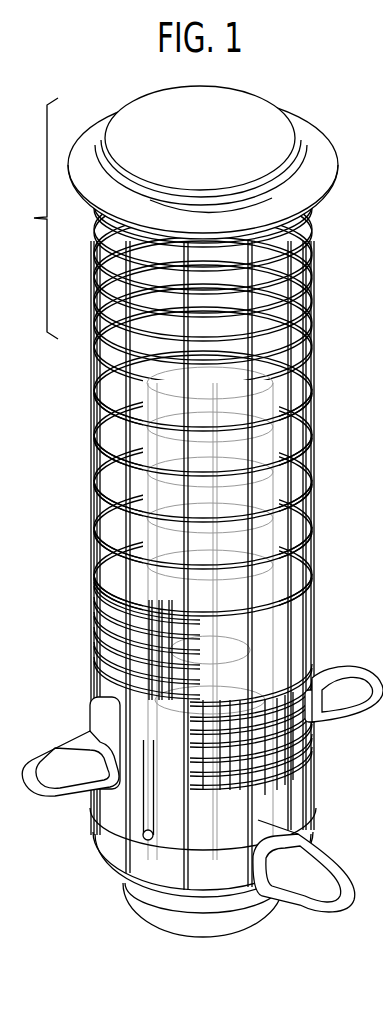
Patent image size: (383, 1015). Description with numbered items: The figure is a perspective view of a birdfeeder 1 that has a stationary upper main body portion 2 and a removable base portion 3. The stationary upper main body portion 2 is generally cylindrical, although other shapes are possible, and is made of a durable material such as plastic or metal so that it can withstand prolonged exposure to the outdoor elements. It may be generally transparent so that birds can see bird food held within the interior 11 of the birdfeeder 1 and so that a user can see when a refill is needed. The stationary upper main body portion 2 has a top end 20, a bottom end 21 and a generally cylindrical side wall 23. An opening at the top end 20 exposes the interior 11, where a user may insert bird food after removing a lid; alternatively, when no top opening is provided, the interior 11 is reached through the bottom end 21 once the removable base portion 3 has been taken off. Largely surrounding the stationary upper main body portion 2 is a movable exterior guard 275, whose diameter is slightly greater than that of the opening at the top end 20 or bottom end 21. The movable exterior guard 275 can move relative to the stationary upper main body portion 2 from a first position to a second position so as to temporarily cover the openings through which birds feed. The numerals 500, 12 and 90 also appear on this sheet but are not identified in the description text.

The birdfeeder 1 is at (204, 365).
The stationary upper main body portion 2 is at (194, 528).
The removable base portion 3 is at (193, 935).
The interior 11 is at (267, 392).
The top end 20 is at (256, 118).
The bottom end 21 is at (110, 860).
The side wall 23 is at (95, 483).
The movable exterior guard 275 is at (97, 408).
The feeder system 500 is at (370, 141).
The hanger 12 is at (366, 452).
The perch 90 is at (374, 486).